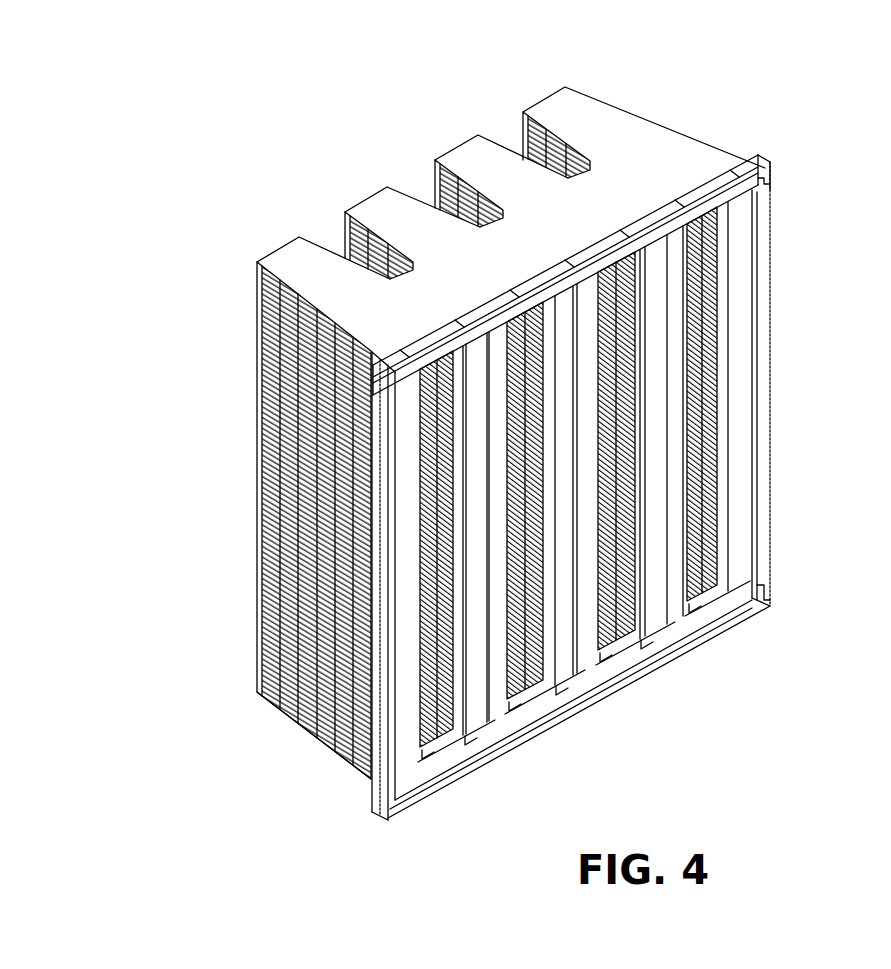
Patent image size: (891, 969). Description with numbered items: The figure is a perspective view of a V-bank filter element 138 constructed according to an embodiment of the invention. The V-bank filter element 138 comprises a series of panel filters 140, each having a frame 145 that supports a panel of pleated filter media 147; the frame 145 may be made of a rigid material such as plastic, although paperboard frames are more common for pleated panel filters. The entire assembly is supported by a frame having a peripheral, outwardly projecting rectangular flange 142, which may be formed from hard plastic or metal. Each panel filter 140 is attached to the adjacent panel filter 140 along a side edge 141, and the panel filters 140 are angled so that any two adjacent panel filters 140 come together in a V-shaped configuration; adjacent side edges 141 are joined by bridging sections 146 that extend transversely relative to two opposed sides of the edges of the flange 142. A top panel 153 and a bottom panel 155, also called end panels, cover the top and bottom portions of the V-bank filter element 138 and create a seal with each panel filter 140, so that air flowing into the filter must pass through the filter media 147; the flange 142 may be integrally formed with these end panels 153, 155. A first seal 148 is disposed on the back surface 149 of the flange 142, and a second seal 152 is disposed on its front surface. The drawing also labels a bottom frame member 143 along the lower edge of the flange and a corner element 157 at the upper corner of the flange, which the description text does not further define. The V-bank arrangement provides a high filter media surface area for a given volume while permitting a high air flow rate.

The V-bank filter element 138 is at (335, 112).
The panel filter 140 is at (350, 243).
The side edge 141 is at (683, 304).
The rectangular flange 142 is at (772, 480).
The bottom frame member 143 is at (500, 760).
The frame 145 is at (302, 725).
The bridging section 146 is at (677, 617).
The pleated filter media 147 is at (290, 533).
The first seal 148 is at (391, 802).
The back surface 149 is at (658, 207).
The second seal 152 is at (760, 575).
The top panel 153 is at (382, 202).
The bottom panel 155 is at (537, 710).
The corner bracket 157 is at (759, 180).